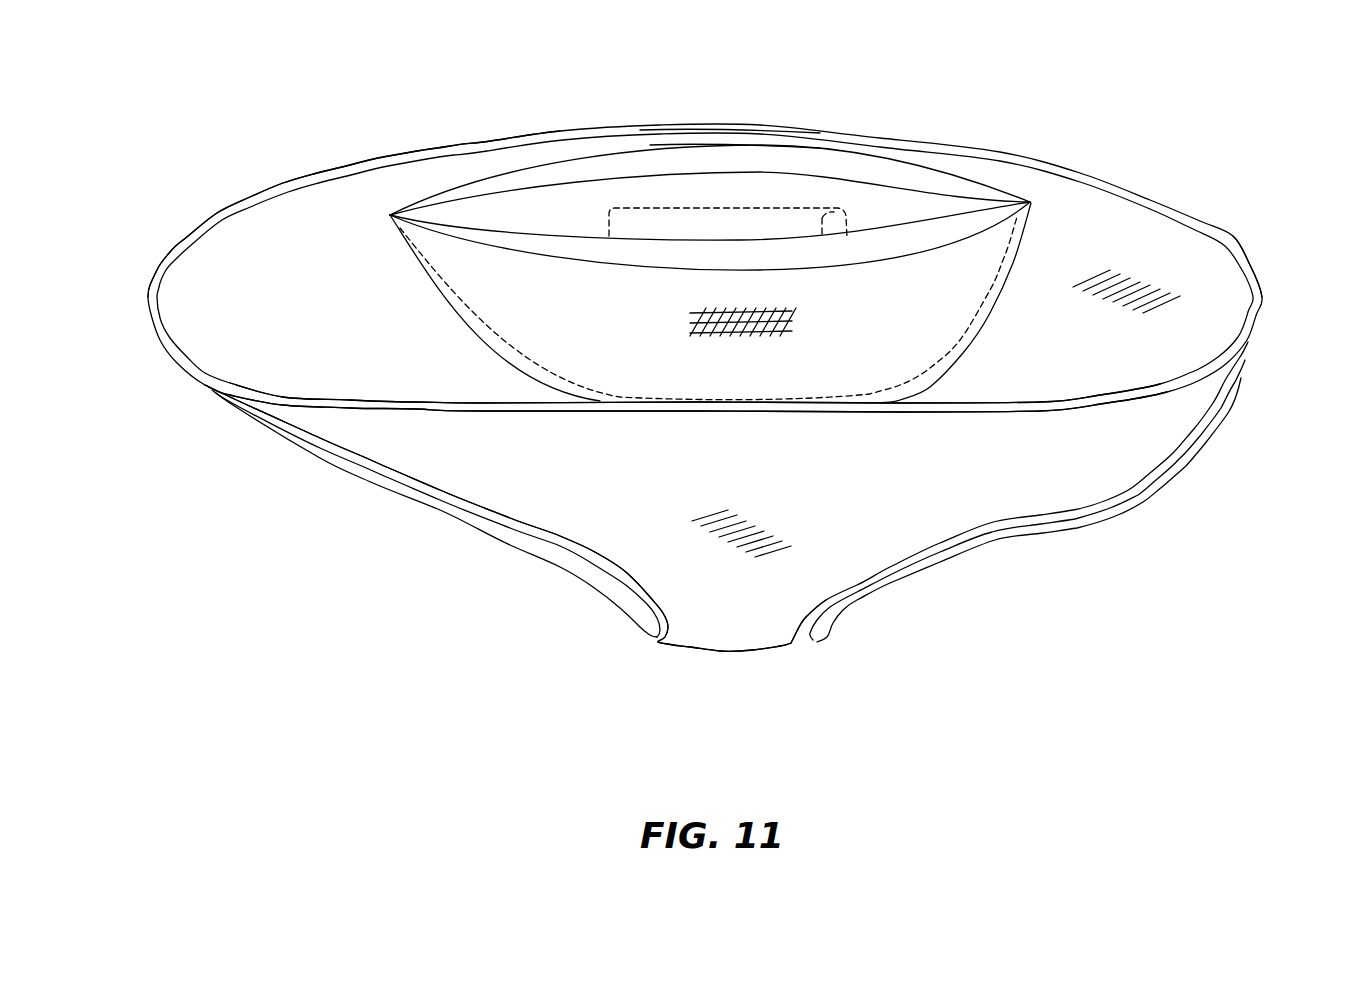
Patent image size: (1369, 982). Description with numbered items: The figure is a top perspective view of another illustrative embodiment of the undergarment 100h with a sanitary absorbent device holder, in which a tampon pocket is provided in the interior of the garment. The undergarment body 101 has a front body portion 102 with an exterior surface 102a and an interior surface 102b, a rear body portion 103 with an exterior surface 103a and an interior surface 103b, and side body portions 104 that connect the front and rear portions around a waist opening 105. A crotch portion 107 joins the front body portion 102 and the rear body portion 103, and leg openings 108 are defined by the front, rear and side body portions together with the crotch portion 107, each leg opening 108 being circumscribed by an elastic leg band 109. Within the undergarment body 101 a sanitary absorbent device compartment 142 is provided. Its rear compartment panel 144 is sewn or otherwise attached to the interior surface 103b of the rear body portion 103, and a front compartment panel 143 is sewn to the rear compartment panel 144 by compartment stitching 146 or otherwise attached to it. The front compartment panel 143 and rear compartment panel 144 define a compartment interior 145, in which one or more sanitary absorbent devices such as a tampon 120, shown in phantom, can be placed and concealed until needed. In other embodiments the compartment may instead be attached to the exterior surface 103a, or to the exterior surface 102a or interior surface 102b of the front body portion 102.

The undergarment 100h is at (327, 115).
The undergarment body 101 is at (1250, 232).
The front body portion 102 is at (452, 400).
The exterior surface 102a is at (457, 455).
The interior surface 102b is at (358, 392).
The rear body portion 103 is at (882, 143).
The exterior surface 103a is at (782, 135).
The interior surface 103b is at (697, 140).
The side body portions 104 is at (147, 295).
The waist opening 105 is at (207, 247).
The crotch portion 107 is at (730, 620).
The leg openings 108 is at (559, 553).
The elastic leg band 109 is at (641, 582).
The tampon 120 is at (780, 228).
The sanitary absorbent device compartment 142 is at (532, 150).
The front compartment panel 143 is at (967, 224).
The rear compartment panel 144 is at (944, 180).
The compartment interior 145 is at (578, 196).
The compartment stitching 146 is at (992, 298).